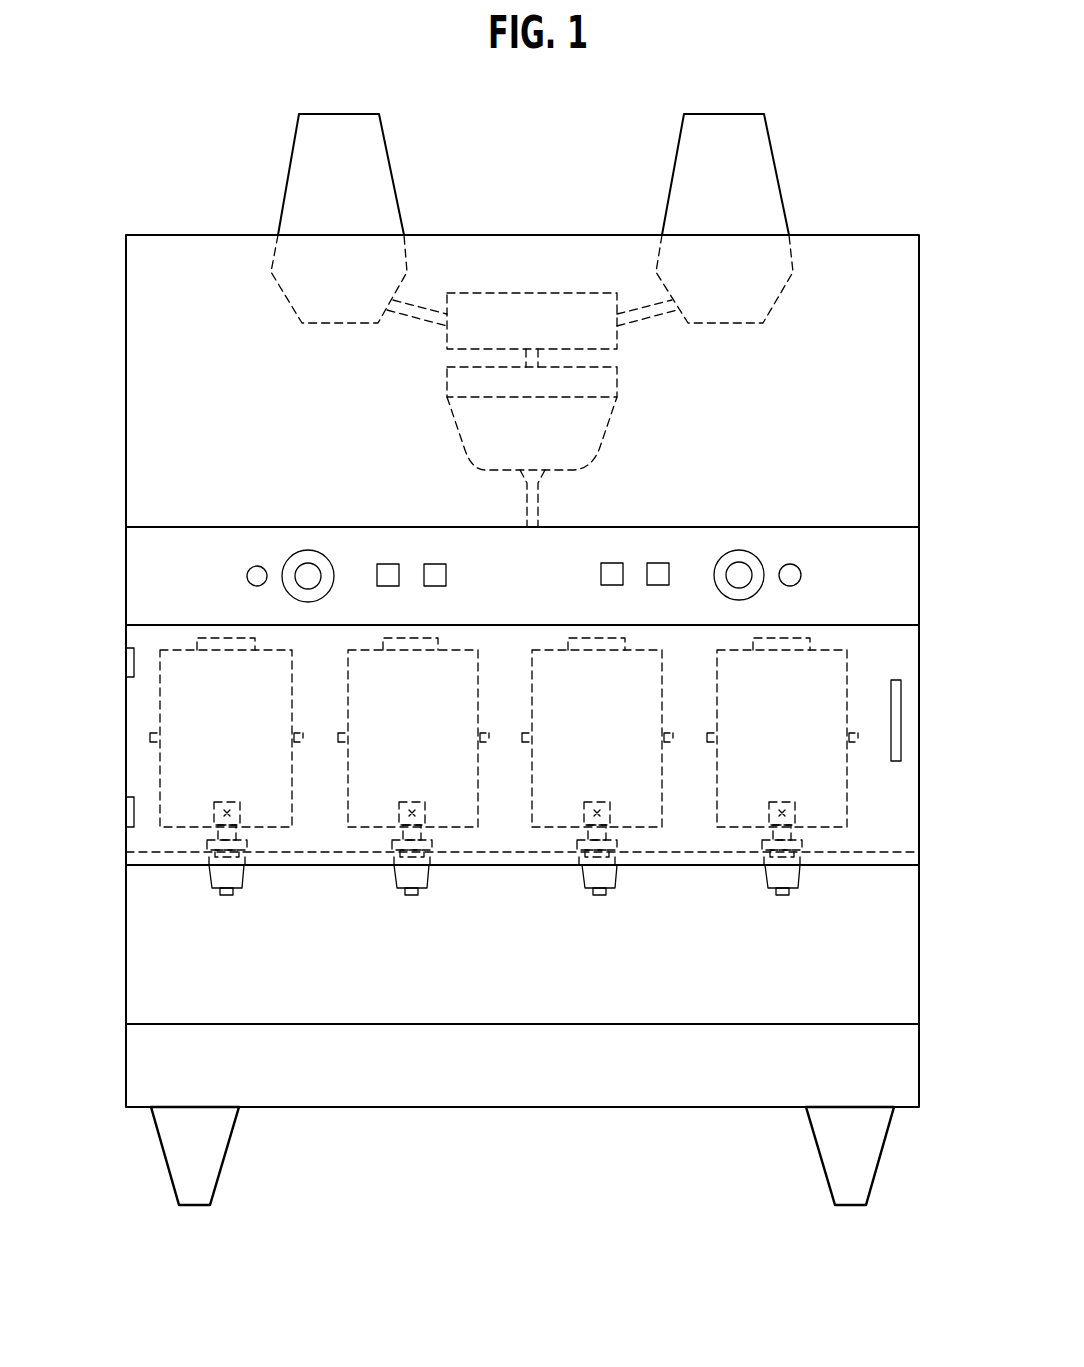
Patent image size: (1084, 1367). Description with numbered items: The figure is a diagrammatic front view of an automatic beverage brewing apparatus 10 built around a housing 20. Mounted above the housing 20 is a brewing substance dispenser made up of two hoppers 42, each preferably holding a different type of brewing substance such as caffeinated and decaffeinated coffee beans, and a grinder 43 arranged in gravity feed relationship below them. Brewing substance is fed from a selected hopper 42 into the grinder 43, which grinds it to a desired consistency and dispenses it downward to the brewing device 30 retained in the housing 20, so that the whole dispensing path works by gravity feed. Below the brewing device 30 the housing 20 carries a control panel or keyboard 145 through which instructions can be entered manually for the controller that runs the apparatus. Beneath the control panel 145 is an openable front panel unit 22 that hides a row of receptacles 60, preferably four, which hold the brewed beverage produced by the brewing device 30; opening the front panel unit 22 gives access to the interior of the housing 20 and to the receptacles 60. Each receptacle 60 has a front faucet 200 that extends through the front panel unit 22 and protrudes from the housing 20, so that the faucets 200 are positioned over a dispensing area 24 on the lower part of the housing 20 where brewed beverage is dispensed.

The automatic beverage brewing apparatus 10 is at (526, 608).
The housing 20 is at (887, 330).
The front panel unit 22 is at (873, 658).
The dispensing area 24 is at (893, 1015).
The brewing device 30 is at (600, 382).
The hopper 42 is at (365, 164).
The grinder 43 is at (538, 305).
The receptacle 60 is at (227, 766).
The control panel or keyboard 145 is at (868, 598).
The front faucet 200 is at (226, 877).